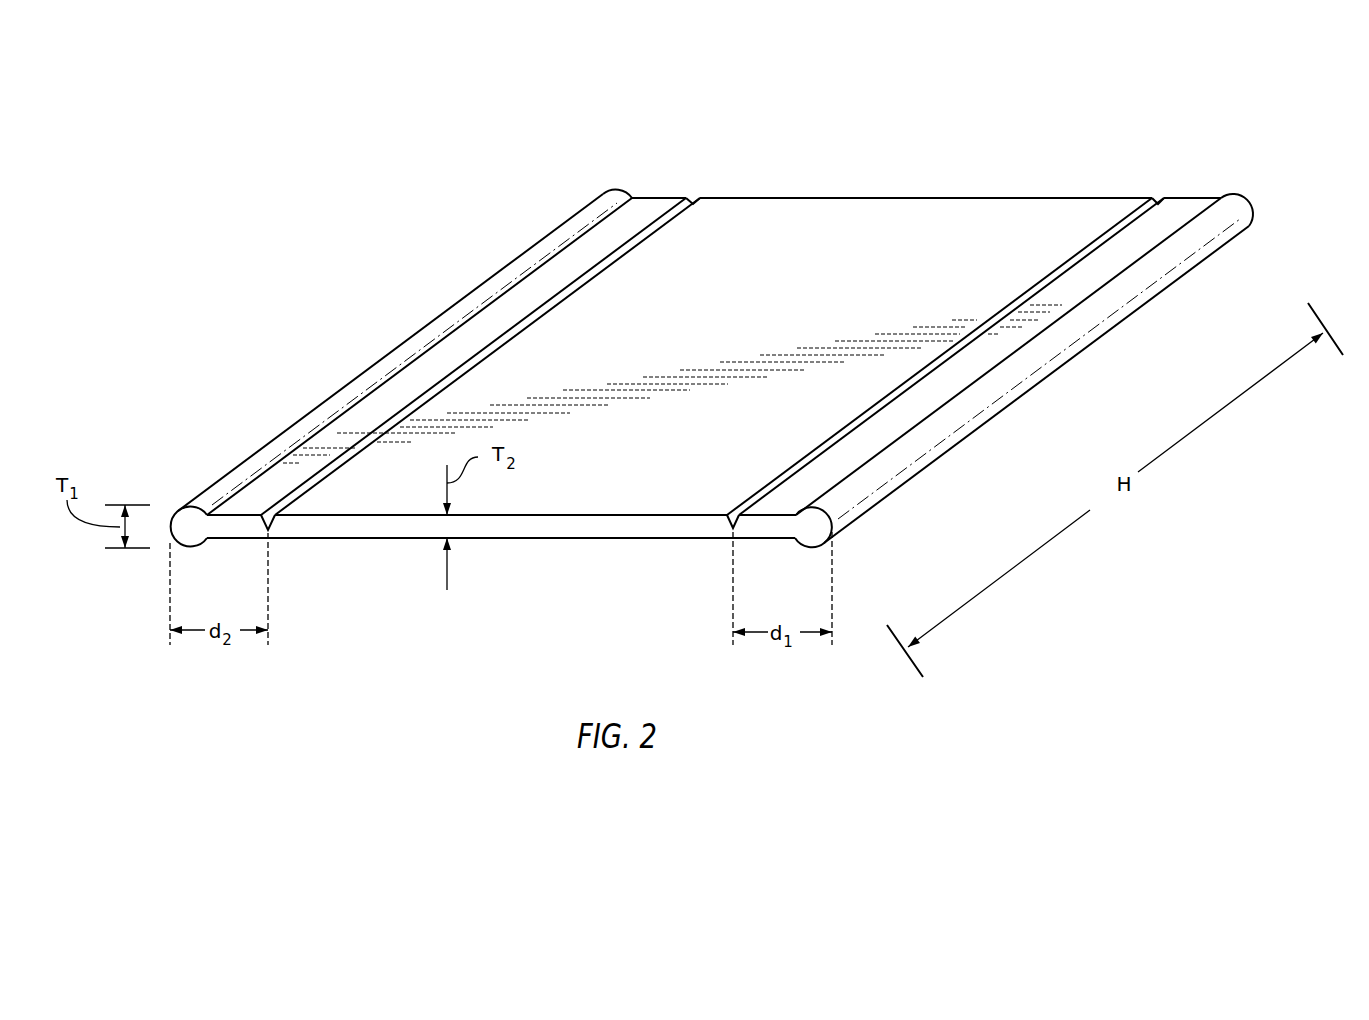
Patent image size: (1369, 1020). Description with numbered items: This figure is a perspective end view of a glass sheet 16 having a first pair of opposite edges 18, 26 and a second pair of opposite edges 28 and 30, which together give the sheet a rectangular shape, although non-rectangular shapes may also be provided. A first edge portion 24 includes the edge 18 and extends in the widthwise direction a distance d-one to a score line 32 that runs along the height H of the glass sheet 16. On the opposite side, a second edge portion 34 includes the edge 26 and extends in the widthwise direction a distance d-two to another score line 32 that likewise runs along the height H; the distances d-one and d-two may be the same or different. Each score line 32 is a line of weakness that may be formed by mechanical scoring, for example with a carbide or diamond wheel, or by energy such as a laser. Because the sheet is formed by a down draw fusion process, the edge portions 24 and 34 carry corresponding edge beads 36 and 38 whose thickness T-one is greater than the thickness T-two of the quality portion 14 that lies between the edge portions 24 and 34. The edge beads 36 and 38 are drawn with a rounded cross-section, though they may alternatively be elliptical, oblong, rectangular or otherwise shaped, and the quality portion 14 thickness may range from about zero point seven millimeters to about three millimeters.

The quality portion 14 is at (672, 323).
The glass sheet 16 is at (338, 237).
The edge 18 is at (1055, 372).
The first edge portion 24 is at (1250, 177).
The edge 26 is at (277, 463).
The edge 28 is at (560, 538).
The edge 30 is at (902, 198).
The score line 32 is at (1085, 243).
The second edge portion 34 is at (705, 172).
The edge bead 36 is at (887, 475).
The edge bead 38 is at (433, 318).